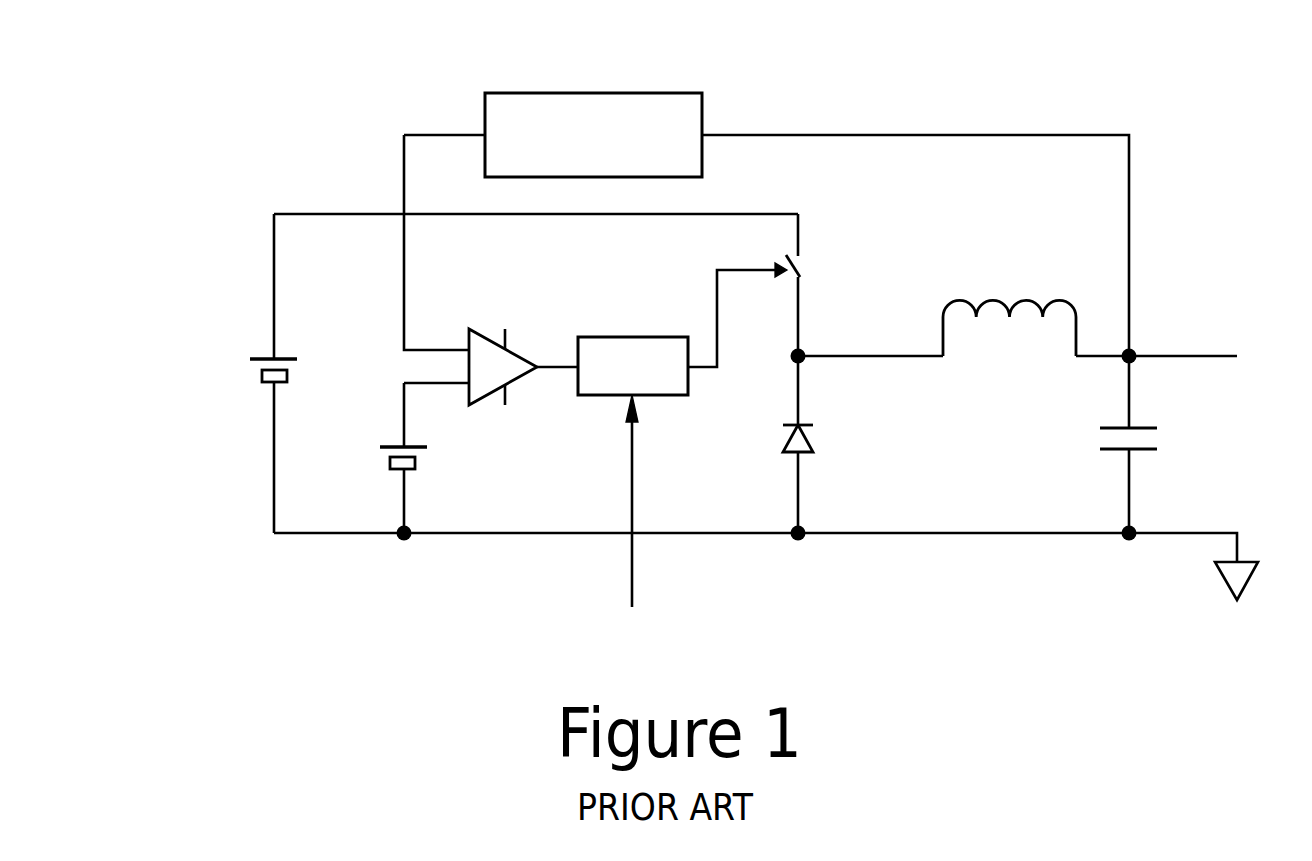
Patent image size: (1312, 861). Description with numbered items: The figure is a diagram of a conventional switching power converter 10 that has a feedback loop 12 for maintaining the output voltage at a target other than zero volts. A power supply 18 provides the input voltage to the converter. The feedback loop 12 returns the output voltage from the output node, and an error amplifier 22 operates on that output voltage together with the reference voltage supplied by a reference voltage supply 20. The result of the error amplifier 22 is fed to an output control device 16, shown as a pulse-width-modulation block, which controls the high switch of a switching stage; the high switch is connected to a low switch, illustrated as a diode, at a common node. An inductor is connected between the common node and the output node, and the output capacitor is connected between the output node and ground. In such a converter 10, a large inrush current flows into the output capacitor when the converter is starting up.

The switching power converter 10 is at (1077, 93).
The feedback loop 12 is at (637, 93).
The output control device 16 is at (635, 337).
The power supply 18 is at (282, 355).
The reference voltage supply 20 is at (415, 463).
The error amplifier 22 is at (487, 330).